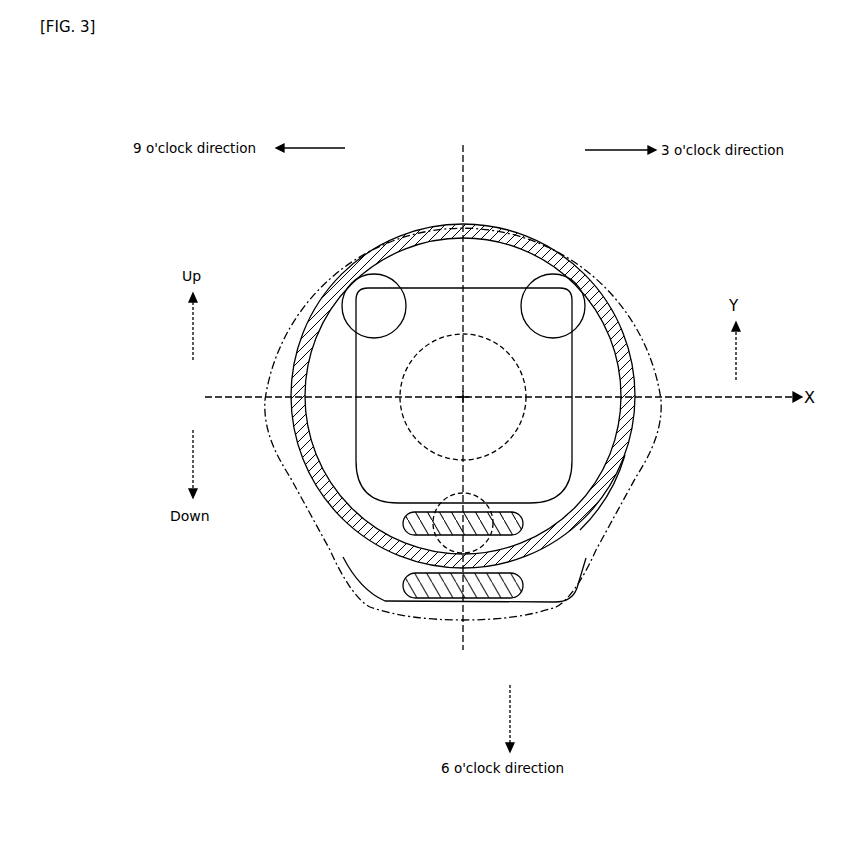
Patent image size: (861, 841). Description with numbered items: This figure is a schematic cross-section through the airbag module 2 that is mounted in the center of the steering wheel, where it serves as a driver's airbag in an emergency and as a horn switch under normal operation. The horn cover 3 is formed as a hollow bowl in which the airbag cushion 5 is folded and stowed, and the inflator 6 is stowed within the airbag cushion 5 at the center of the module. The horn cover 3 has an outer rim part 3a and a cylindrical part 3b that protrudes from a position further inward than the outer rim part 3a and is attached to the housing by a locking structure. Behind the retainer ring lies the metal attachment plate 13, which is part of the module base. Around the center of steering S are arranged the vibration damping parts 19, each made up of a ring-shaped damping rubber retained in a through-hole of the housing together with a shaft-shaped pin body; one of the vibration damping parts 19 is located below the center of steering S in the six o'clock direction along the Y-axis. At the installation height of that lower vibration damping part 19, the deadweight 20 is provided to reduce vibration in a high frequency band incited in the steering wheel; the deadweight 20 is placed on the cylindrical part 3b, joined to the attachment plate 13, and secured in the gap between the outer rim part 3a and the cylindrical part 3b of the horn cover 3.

The airbag module 2 is at (463, 398).
The horn cover 3 is at (463, 447).
The outer rim part 3a is at (559, 606).
The cylindrical part 3b is at (618, 463).
The airbag cushion 5 is at (566, 481).
The inflator 6 is at (484, 334).
The attachment plate 13 is at (458, 396).
The vibration damping parts 19 is at (371, 273).
The deadweight 20 is at (403, 528).
The center of steering S is at (467, 400).